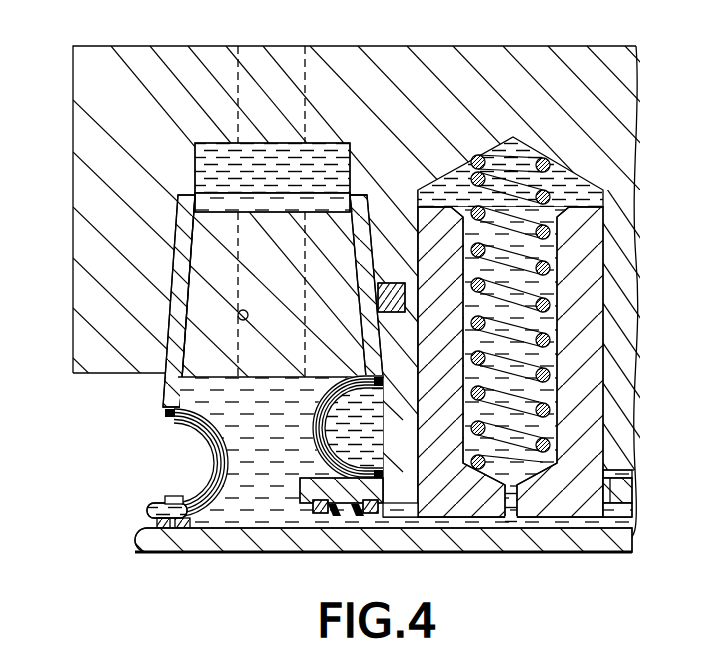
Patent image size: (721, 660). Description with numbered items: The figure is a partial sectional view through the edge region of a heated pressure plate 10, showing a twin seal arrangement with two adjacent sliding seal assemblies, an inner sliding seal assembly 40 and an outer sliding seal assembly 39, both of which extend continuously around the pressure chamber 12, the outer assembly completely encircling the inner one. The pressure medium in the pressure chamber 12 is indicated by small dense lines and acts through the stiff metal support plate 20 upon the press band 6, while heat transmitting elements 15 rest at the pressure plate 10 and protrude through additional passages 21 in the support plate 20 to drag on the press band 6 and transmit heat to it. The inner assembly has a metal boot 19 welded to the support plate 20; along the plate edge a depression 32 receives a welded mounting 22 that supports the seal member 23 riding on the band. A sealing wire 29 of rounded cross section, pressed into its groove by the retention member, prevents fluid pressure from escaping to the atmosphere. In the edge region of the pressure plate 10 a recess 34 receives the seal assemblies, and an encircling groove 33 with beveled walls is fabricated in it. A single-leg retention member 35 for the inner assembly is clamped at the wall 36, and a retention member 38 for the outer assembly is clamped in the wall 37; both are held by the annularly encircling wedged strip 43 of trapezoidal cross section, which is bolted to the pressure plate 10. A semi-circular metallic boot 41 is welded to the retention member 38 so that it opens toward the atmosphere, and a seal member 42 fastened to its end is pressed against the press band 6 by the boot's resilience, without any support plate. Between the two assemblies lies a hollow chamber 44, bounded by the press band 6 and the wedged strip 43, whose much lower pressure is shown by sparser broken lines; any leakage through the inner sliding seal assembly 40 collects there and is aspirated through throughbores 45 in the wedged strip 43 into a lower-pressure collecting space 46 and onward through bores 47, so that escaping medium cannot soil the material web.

The press band 6 is at (487, 533).
The pressure plate 10 is at (157, 68).
The pressure chamber 12 is at (613, 518).
The heat transmitting elements 15 is at (594, 437).
The metal boot 19 is at (310, 421).
The support plate 20 is at (372, 514).
The additional passages 21 is at (405, 503).
The mounting 22 is at (386, 513).
The seal member 23 is at (340, 514).
The sealing wire 29 is at (388, 291).
The depression 32 is at (307, 505).
The encircling groove 33 is at (233, 200).
The recess 34 is at (148, 400).
The retention member 35 is at (360, 198).
The wall 36 is at (365, 235).
The wall 37 is at (183, 245).
The retention member 38 is at (182, 290).
The outer sliding seal assembly 39 is at (180, 465).
The inner sliding seal assembly 40 is at (302, 437).
The metallic boot 41 is at (197, 481).
The seal member 42 is at (163, 522).
The wedged strip 43 is at (195, 348).
The hollow chamber 44 is at (195, 518).
The throughbores 45 is at (238, 311).
The collecting space 46 is at (207, 162).
The bores 47 is at (241, 84).